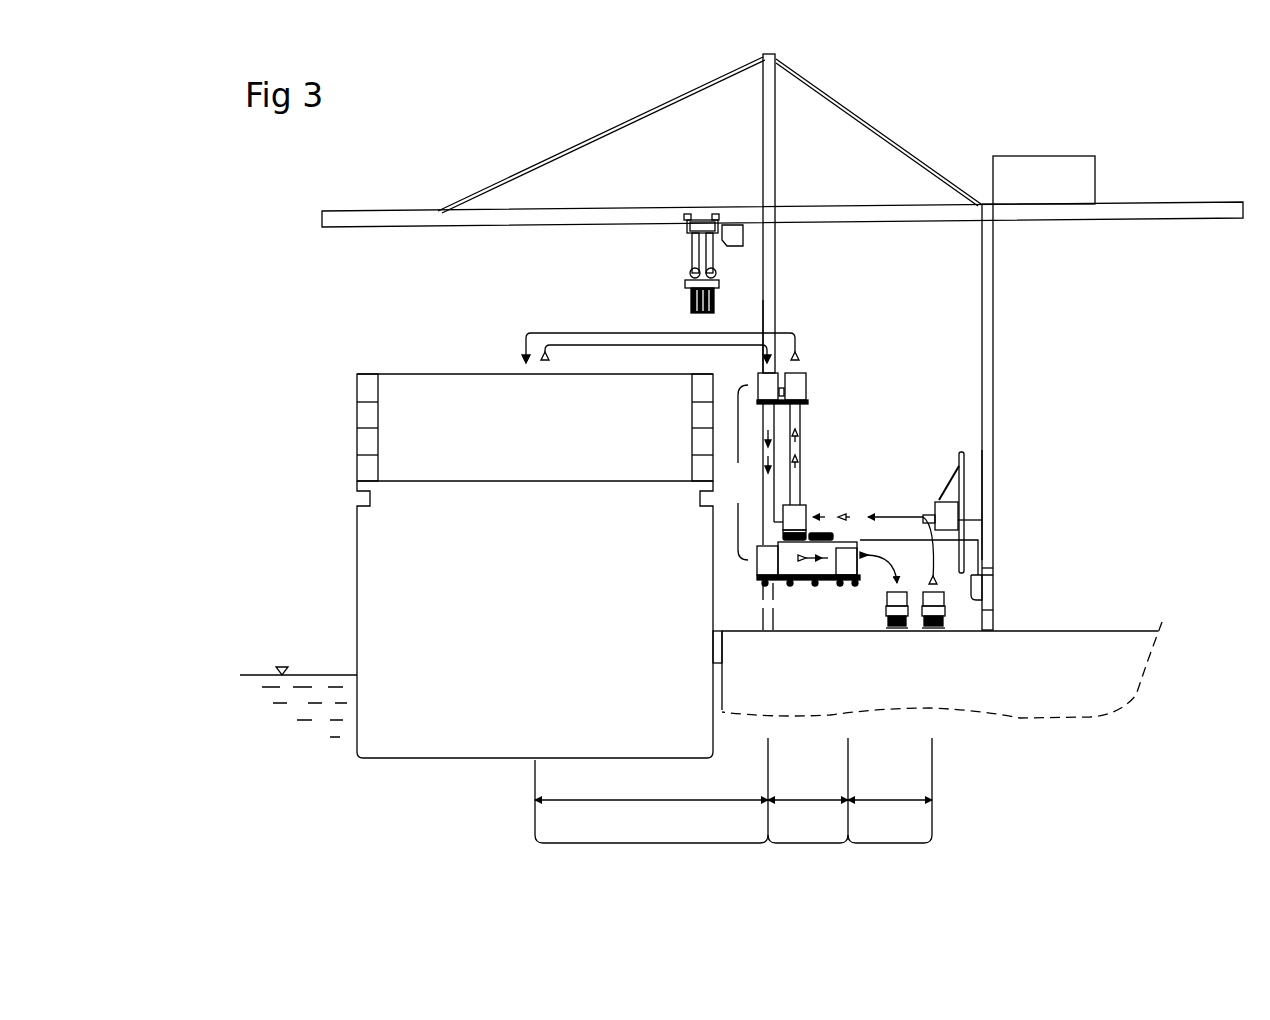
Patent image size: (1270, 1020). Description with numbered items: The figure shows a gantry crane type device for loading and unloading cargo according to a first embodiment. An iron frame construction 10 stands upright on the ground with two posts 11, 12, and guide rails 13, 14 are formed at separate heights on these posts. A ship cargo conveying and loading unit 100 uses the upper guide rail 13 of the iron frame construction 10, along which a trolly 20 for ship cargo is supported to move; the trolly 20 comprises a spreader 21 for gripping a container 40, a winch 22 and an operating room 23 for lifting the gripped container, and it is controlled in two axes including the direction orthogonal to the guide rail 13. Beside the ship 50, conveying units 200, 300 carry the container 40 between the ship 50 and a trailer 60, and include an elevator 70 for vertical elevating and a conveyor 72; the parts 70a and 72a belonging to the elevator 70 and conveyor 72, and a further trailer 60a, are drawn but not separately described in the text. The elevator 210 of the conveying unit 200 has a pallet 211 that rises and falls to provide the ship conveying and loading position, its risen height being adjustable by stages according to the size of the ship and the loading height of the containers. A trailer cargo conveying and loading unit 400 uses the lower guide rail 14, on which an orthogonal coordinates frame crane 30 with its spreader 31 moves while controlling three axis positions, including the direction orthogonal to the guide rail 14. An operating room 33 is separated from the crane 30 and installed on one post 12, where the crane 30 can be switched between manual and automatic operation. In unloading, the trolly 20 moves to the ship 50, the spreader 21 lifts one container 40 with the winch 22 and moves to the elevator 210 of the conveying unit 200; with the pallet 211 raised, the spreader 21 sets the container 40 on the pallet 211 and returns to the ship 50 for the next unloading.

The iron frame construction 10 is at (890, 137).
The post 11 is at (768, 318).
The post 12 is at (990, 320).
The upper guide rail 13 is at (1157, 208).
The lower guide rail 14 is at (973, 526).
The trolly 20 is at (686, 238).
The spreader 21 is at (686, 284).
The winch 22 is at (692, 263).
The operating room 23 is at (737, 226).
The container 40 is at (690, 305).
The ship 50 is at (380, 636).
The trailer 60 is at (892, 632).
The truck 60a is at (937, 632).
The elevator 70 is at (766, 497).
The transfer carriage 70a is at (798, 486).
The conveyor 72 is at (826, 584).
The roller 72a is at (818, 532).
The conveying unit 200 is at (761, 472).
The elevator 210 is at (813, 392).
The pallet 211 is at (808, 404).
The orthogonal coordinates frame crane 30 is at (959, 465).
The spreader 31 is at (942, 503).
The operating room 33 is at (993, 593).
The ship cargo conveying and loading unit 100 is at (651, 790).
The conveying unit 300 is at (808, 790).
The trailer cargo conveying and loading unit 400 is at (890, 790).